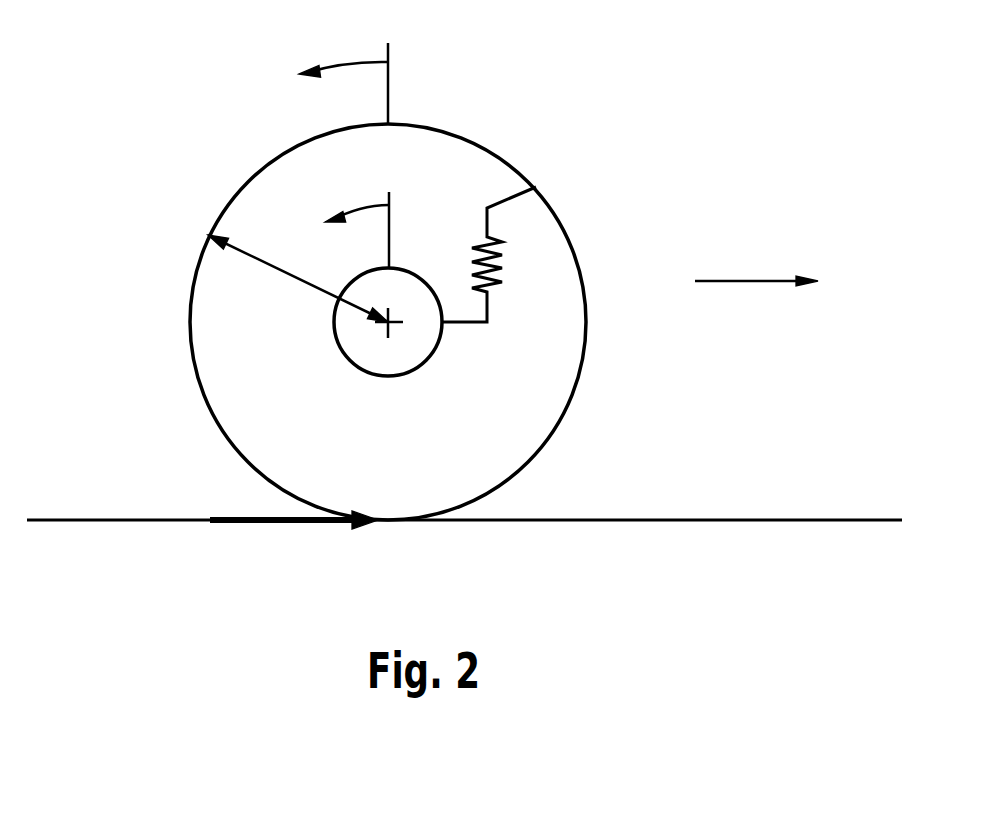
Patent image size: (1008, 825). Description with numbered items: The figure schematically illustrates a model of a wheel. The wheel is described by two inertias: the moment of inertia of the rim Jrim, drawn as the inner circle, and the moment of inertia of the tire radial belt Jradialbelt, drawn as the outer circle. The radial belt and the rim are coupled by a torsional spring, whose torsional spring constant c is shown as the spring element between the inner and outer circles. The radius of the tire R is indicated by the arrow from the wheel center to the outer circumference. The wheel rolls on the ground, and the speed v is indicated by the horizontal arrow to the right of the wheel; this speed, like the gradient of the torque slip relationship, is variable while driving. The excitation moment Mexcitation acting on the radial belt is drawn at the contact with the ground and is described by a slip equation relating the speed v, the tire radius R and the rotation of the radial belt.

The moment of inertia of the tire radial belt Jradialbelt is at (554, 434).
The moment of inertia of the rim Jrim is at (408, 374).
The radius of the tire R is at (298, 278).
The torsional spring constant c is at (489, 254).
The speed v is at (756, 268).
The excitation moment Mexcitation is at (235, 519).